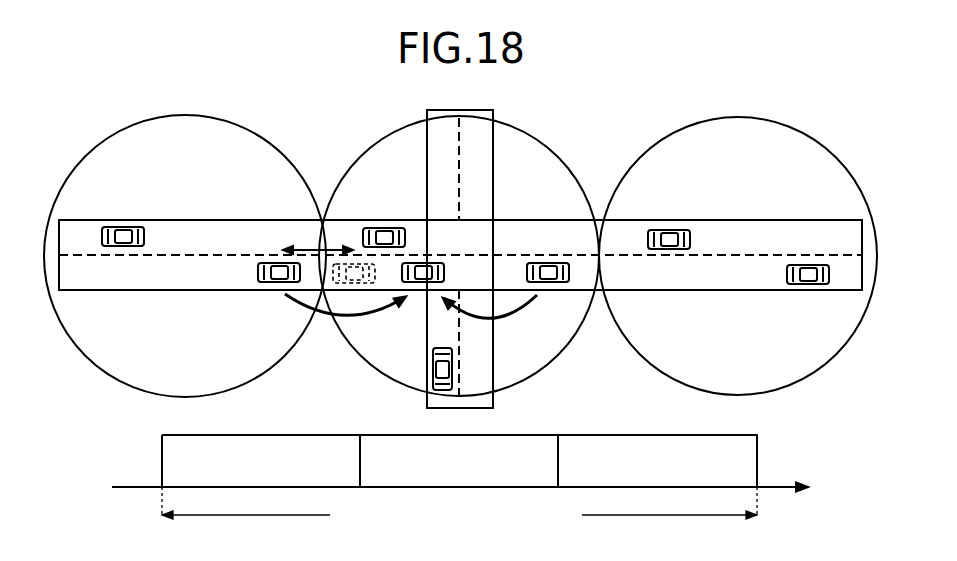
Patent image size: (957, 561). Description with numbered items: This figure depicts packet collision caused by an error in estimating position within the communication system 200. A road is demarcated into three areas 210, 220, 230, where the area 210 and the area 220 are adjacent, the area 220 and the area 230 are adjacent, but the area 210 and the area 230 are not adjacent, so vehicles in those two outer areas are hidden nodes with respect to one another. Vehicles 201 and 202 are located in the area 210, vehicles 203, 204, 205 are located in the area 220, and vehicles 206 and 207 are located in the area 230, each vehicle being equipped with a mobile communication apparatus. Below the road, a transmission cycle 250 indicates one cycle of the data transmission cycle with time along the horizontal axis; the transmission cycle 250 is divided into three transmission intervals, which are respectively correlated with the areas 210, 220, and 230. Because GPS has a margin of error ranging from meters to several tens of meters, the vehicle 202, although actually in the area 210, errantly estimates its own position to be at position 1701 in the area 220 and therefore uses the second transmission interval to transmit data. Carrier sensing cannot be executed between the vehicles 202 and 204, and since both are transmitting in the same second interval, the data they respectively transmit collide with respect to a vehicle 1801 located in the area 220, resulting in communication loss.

The communication system 200 is at (648, 86).
The area 210 is at (253, 115).
The area 220 is at (525, 128).
The area 230 is at (811, 117).
The vehicle 201 is at (122, 226).
The vehicle 202 is at (268, 284).
The vehicle 203 is at (385, 227).
The vehicle 204 is at (553, 284).
The vehicle 205 is at (433, 355).
The vehicle 206 is at (670, 229).
The vehicle 207 is at (803, 285).
The position 1701 is at (388, 271).
The vehicle 1801 is at (446, 275).
The transmission cycle 250 is at (237, 516).